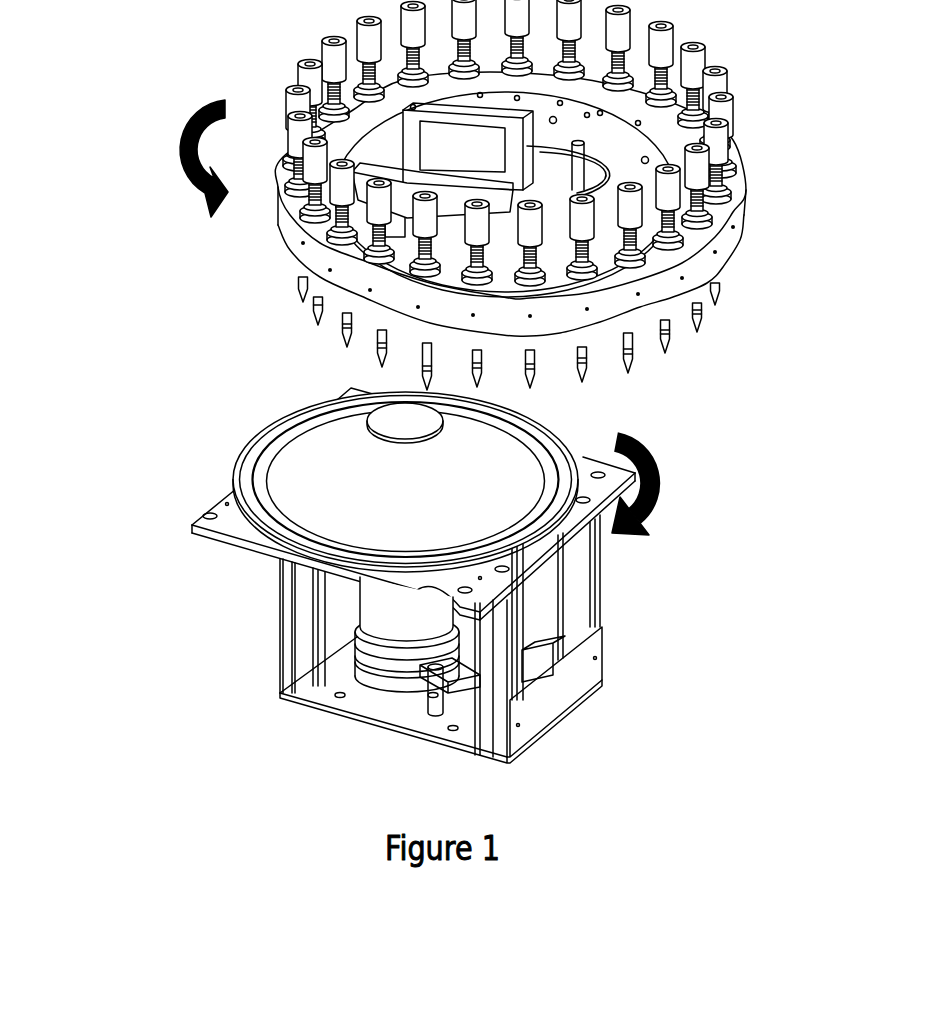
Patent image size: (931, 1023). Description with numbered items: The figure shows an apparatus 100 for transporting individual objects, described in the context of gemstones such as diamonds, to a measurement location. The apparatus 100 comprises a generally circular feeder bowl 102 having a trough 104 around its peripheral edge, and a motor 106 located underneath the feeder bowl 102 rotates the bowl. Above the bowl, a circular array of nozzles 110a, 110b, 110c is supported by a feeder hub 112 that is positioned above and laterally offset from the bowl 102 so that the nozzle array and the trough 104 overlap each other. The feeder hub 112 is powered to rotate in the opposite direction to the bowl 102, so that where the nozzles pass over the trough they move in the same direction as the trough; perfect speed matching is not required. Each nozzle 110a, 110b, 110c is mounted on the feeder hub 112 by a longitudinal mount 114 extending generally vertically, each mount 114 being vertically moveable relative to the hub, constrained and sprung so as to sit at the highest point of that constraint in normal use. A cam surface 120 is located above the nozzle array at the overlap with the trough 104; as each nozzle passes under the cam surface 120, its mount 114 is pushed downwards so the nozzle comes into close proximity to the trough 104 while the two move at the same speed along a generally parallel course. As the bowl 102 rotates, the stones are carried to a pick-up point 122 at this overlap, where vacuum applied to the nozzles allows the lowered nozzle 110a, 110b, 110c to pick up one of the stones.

The apparatus 100 is at (157, 118).
The feeder bowl 102 is at (293, 463).
The trough 104 is at (245, 487).
The motor 106 is at (383, 620).
The nozzle 110a is at (628, 367).
The nozzle 110b is at (669, 344).
The nozzle 110c is at (700, 331).
The feeder hub 112 is at (293, 267).
The longitudinal mount 114 is at (587, 343).
The cam surface 120 is at (468, 220).
The pick-up point 122 is at (416, 398).